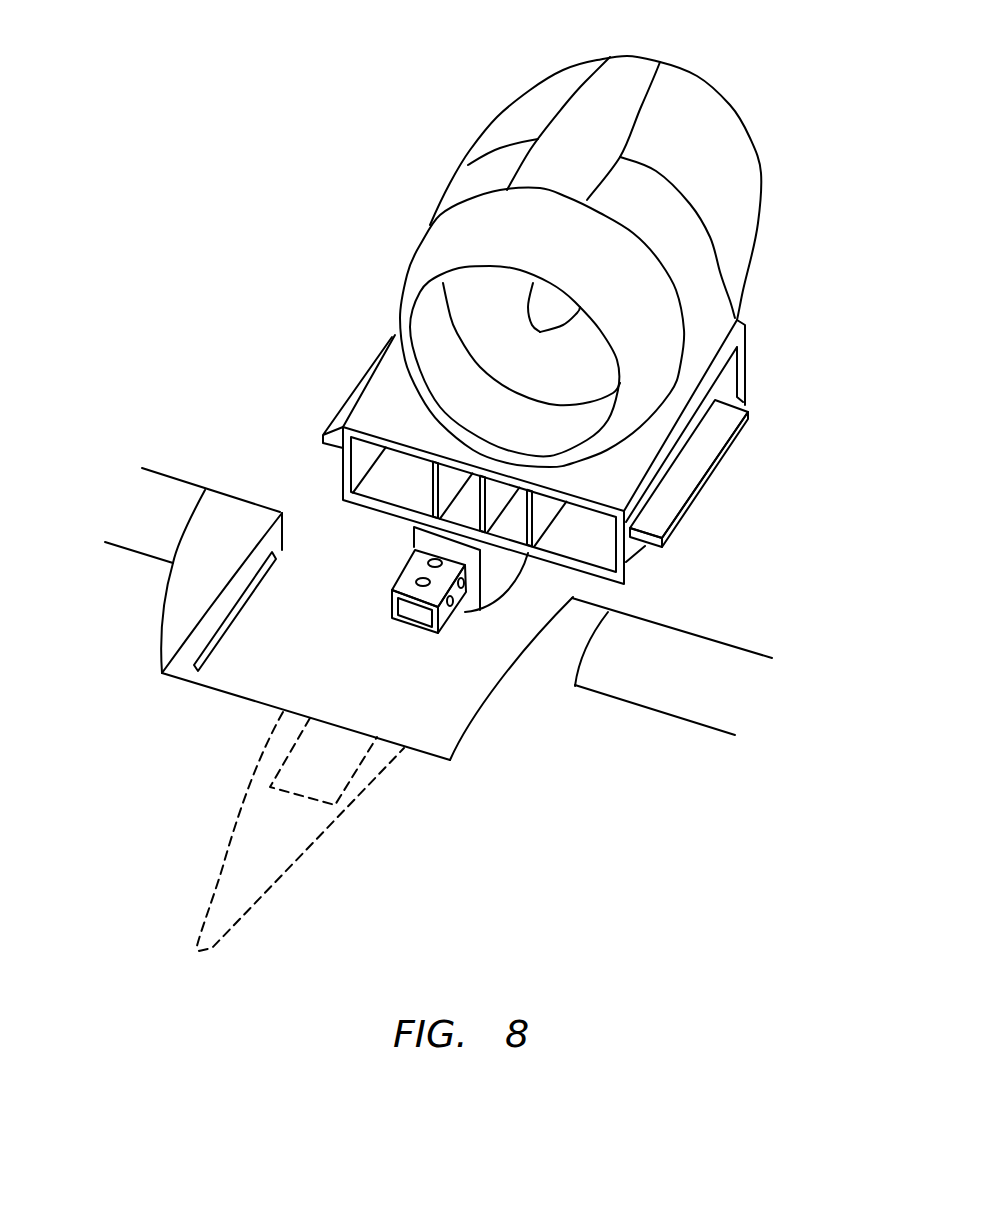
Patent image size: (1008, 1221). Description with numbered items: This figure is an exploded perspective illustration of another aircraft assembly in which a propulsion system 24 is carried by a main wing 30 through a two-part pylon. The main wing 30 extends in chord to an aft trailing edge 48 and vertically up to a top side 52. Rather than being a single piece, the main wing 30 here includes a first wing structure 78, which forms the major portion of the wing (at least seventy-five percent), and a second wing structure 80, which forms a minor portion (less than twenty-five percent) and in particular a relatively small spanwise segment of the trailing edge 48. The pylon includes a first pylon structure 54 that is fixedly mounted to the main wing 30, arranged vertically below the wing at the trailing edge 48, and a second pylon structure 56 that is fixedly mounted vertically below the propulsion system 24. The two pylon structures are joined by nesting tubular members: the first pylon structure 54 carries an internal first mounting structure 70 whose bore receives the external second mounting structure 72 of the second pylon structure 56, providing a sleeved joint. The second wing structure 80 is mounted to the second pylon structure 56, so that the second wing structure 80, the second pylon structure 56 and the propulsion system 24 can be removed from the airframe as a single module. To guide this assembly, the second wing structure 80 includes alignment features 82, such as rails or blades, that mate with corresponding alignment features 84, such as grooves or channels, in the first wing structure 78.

The propulsion system 24 is at (752, 118).
The main wing 30 is at (764, 652).
The trailing edge 48 is at (739, 321).
The top side 52 is at (143, 602).
The first pylon structure 54 is at (367, 812).
The second pylon structure 56 is at (506, 595).
The first mounting structure 70 is at (283, 763).
The second mounting structure 72 is at (387, 610).
The first wing structure 78 is at (770, 680).
The second wing structure 80 is at (750, 360).
The alignment feature 82 is at (714, 452).
The alignment feature 84 is at (277, 580).